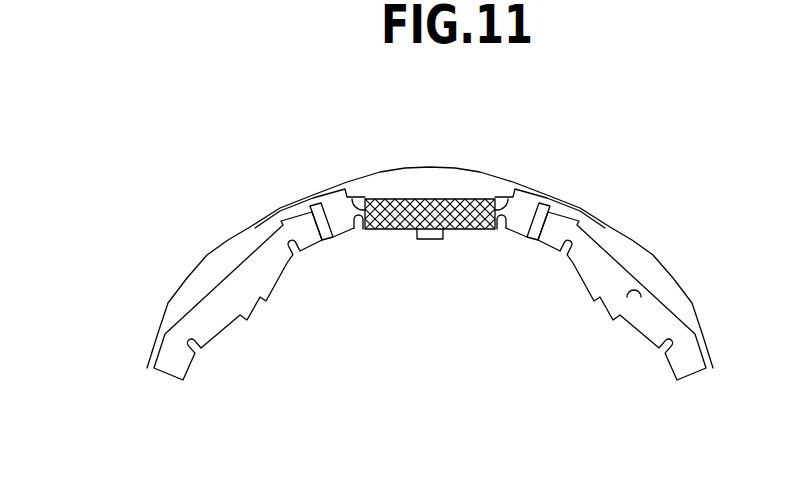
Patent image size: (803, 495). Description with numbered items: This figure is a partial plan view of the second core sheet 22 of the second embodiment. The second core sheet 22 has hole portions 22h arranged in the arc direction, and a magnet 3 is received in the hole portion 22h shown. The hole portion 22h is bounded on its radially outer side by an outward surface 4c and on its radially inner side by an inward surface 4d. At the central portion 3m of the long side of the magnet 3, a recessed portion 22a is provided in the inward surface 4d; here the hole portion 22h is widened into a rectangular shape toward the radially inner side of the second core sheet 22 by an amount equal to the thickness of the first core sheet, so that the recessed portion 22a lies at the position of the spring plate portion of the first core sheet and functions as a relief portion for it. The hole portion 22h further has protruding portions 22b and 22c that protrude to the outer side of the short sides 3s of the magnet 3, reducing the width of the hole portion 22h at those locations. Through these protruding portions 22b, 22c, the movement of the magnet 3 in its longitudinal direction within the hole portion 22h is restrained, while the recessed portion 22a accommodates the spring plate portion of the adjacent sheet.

The second core sheet 22 is at (58, 82).
The recessed portion 22a is at (426, 240).
The protruding portion 22b is at (358, 223).
The protruding portion 22c is at (501, 223).
The hole portion 22h is at (537, 206).
The magnet 3 is at (419, 210).
The central portion 3m is at (437, 222).
The short side 3s is at (345, 191).
The outward surface 4c is at (637, 297).
The inward surface 4d is at (637, 321).